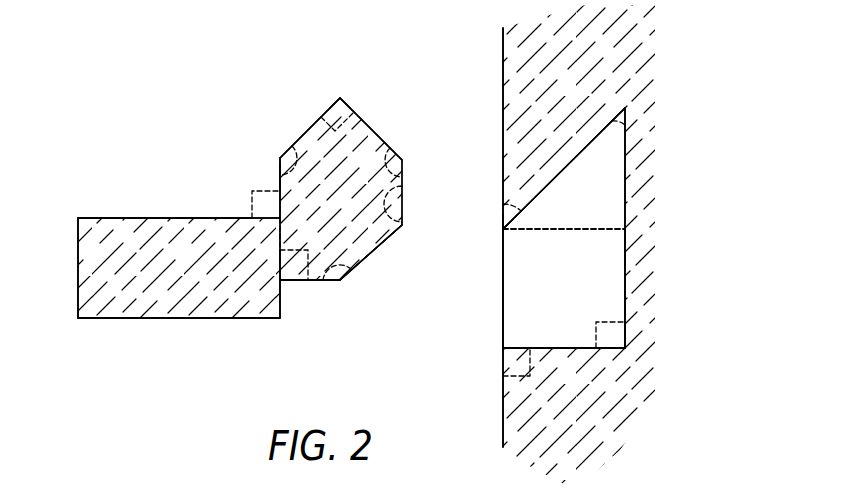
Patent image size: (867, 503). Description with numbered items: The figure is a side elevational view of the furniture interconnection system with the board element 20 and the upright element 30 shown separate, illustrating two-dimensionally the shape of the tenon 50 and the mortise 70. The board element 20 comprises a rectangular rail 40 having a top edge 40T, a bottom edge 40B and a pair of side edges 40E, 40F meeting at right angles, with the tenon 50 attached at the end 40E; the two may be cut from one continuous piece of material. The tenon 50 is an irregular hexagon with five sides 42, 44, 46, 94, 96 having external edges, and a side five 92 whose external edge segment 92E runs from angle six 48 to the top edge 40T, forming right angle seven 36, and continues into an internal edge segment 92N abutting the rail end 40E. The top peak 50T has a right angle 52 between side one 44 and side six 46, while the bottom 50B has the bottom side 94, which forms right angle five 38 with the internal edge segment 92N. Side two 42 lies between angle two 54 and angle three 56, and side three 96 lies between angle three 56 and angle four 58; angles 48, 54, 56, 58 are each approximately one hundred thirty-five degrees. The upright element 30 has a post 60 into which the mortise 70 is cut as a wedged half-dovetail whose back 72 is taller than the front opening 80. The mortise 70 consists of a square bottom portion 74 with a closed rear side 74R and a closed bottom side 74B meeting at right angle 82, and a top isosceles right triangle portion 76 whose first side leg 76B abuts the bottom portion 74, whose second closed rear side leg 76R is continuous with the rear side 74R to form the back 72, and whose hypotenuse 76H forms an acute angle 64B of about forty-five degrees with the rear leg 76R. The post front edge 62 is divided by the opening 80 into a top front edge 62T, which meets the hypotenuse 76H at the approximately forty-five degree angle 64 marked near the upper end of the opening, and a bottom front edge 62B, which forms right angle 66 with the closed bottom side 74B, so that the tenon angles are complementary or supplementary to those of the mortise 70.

The board element 20 is at (124, 91).
The upright element 30 is at (469, 23).
The angle seven 36 is at (263, 217).
The angle five 38 is at (287, 284).
The rail 40 is at (110, 230).
The top edge 40T is at (190, 218).
The bottom edge 40B is at (130, 320).
The side edge 40F is at (78, 264).
The end 40E is at (284, 318).
The side two 42 is at (403, 193).
The side one 44 is at (362, 122).
The side six 46 is at (313, 127).
The angle six 48 is at (278, 157).
The tenon 50 is at (367, 135).
The top peak 50T is at (340, 98).
The bottom 50B is at (320, 283).
The top peak right angle 52 is at (342, 99).
The angle two 54 is at (403, 160).
The angle three 56 is at (402, 226).
The angle four 58 is at (342, 280).
The post 60 is at (520, 50).
The front edge 62 is at (503, 88).
The top front edge 62T is at (503, 229).
The bottom front edge 62B is at (503, 347).
The inclined surface 64 is at (504, 231).
The angle 64B is at (623, 120).
The right angle 66 is at (502, 350).
The mortise 70 is at (447, 385).
The back 72 is at (628, 302).
The square bottom portion 74 is at (563, 329).
The closed rear side 74R is at (628, 270).
The closed bottom side 74B is at (563, 350).
The top isosceles right triangle portion 76 is at (596, 197).
The second closed rear side leg 76R is at (626, 165).
The hypotenuse 76H is at (535, 197).
The first side leg 76B is at (553, 231).
The front opening 80 is at (503, 347).
The angle 82 is at (625, 350).
The side five 92 is at (278, 173).
The external edge segment 92E is at (278, 177).
The internal edge segment 92N is at (280, 255).
The bottom side 94 is at (311, 283).
The side three 96 is at (373, 250).